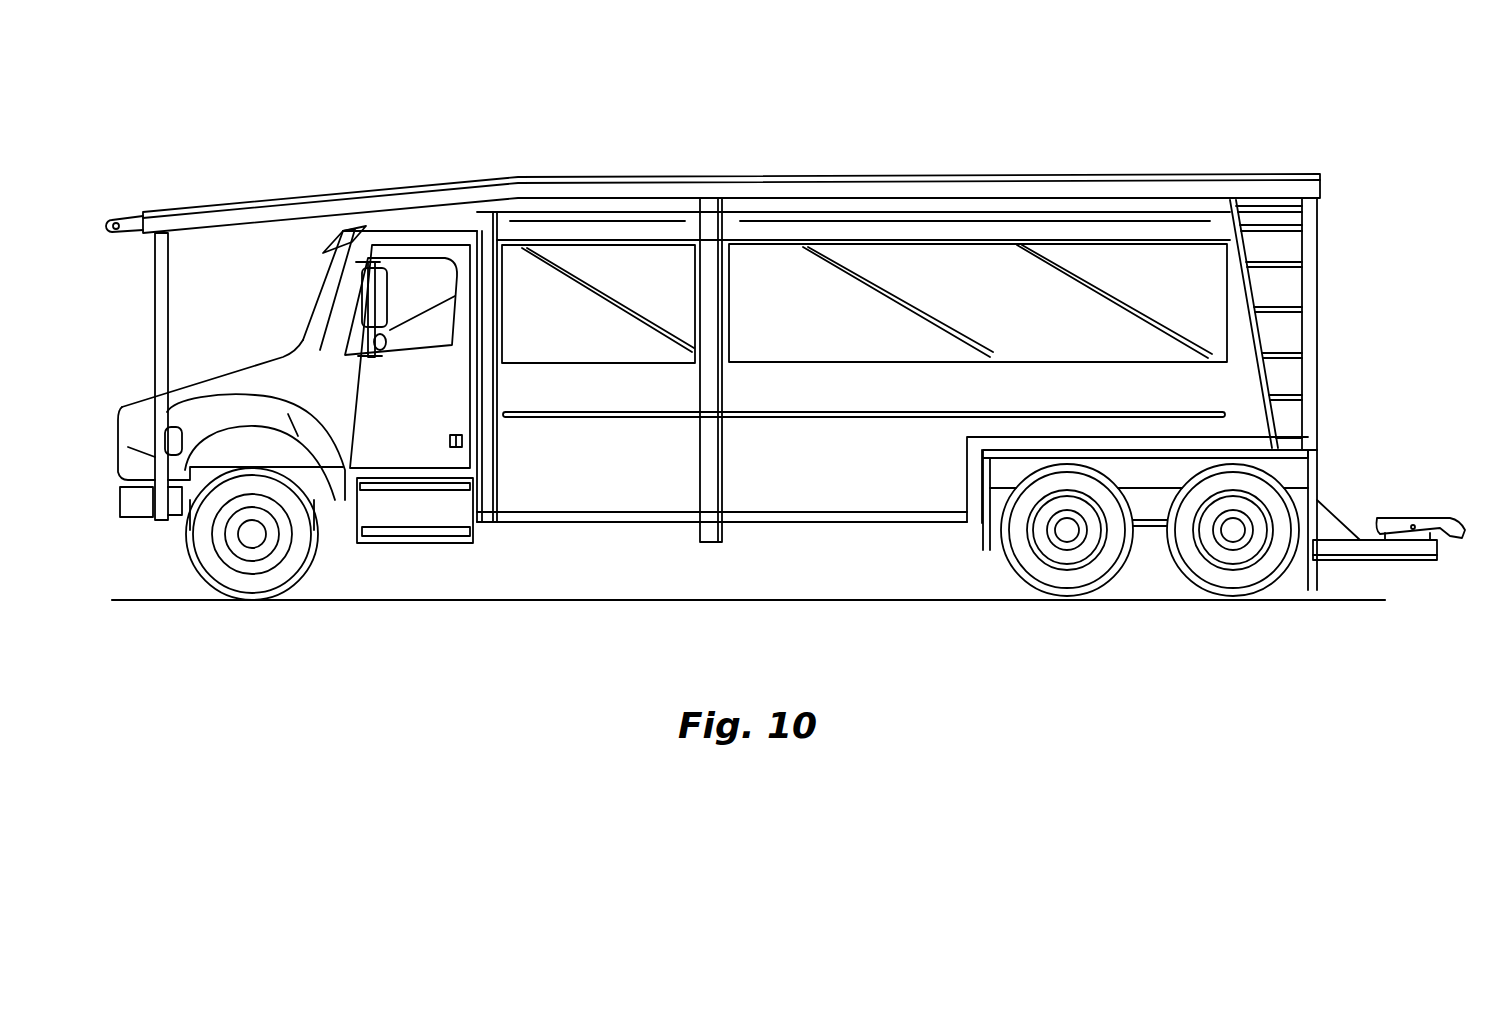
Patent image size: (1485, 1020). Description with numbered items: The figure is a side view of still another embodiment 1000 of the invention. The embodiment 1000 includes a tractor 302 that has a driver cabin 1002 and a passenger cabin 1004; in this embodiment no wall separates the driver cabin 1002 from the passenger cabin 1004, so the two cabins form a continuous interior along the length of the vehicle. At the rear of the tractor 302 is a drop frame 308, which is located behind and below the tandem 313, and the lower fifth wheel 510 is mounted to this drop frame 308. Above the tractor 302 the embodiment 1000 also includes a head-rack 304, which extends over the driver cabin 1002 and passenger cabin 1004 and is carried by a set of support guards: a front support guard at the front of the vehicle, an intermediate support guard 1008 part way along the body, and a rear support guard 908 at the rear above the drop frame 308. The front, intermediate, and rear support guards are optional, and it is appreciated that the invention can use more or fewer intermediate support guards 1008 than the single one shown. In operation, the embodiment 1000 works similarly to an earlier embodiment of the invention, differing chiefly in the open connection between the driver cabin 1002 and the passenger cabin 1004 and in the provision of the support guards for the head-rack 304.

The embodiment 1000 is at (318, 93).
The head-rack 304 is at (622, 187).
The tractor 302 is at (134, 392).
The driver cabin 1002 is at (254, 360).
The passenger cabin 1004 is at (803, 485).
The intermediate support guard 1008 is at (700, 478).
The rear support guard 908 is at (1308, 230).
The tandem 313 is at (1063, 582).
The drop frame 308 is at (1358, 547).
The lower fifth wheel 510 is at (1396, 518).